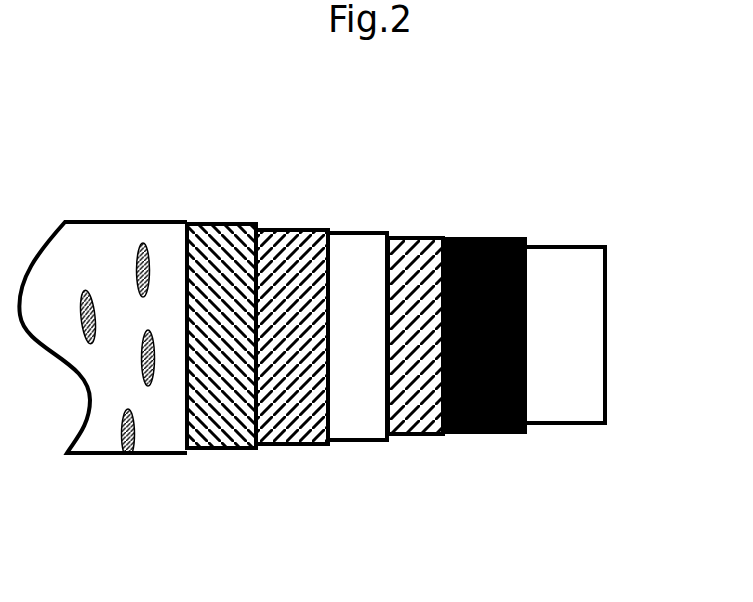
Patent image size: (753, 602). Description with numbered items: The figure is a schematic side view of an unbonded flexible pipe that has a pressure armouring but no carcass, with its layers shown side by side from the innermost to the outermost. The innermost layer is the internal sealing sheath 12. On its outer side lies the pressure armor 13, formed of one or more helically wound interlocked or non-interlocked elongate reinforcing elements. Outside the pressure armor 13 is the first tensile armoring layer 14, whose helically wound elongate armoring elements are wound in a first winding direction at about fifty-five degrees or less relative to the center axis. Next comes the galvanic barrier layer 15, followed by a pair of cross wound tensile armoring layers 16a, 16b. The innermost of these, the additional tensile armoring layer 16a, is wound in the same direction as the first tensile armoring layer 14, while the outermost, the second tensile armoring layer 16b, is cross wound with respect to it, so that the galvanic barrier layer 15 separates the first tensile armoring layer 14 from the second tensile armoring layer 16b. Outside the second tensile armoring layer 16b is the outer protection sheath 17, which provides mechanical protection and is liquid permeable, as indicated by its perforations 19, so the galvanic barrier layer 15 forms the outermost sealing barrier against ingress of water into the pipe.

The internal sealing sheath 12 is at (582, 313).
The pressure armor 13 is at (490, 433).
The first tensile armoring layer 14 is at (410, 430).
The galvanic barrier layer 15 is at (357, 250).
The additional tensile armoring layer 16a is at (292, 390).
The second tensile armoring layer 16b is at (222, 245).
The outer protection sheath 17 is at (118, 238).
The perforations 19 is at (83, 307).